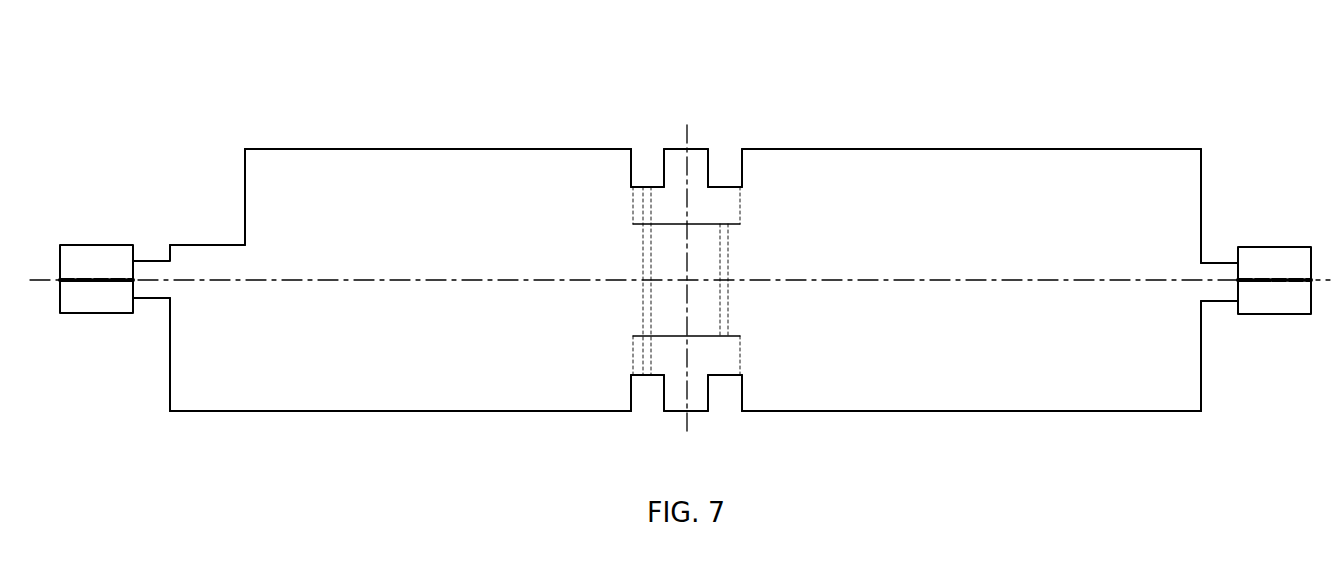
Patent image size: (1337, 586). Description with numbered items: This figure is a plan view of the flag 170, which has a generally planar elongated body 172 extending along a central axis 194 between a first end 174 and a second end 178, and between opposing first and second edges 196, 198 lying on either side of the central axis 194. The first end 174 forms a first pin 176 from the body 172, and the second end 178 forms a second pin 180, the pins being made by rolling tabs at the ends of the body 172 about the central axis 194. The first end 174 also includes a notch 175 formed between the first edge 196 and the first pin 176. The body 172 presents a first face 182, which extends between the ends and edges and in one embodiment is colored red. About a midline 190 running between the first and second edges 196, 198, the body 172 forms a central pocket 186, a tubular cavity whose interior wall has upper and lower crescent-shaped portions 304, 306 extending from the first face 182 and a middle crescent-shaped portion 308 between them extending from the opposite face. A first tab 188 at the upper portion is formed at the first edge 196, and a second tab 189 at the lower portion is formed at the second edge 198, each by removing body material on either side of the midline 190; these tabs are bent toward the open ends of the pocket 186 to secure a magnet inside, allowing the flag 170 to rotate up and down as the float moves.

The flag 170 is at (978, 108).
The body 172 is at (1201, 150).
The first end 174 is at (192, 450).
The notch 175 is at (208, 195).
The first pin 176 is at (85, 248).
The second end 178 is at (1157, 442).
The second pin 180 is at (1272, 252).
The first face 182 is at (428, 351).
The central pocket 186 is at (627, 252).
The first tab 188 is at (694, 148).
The second tab 189 is at (670, 412).
The midline 190 is at (683, 392).
The central axis 194 is at (942, 280).
The first edge 196 is at (413, 148).
The second edge 198 is at (917, 412).
The upper crescent-shaped portion 304 is at (710, 210).
The lower crescent-shaped portion 306 is at (715, 360).
The middle crescent-shaped portion 308 is at (705, 263).